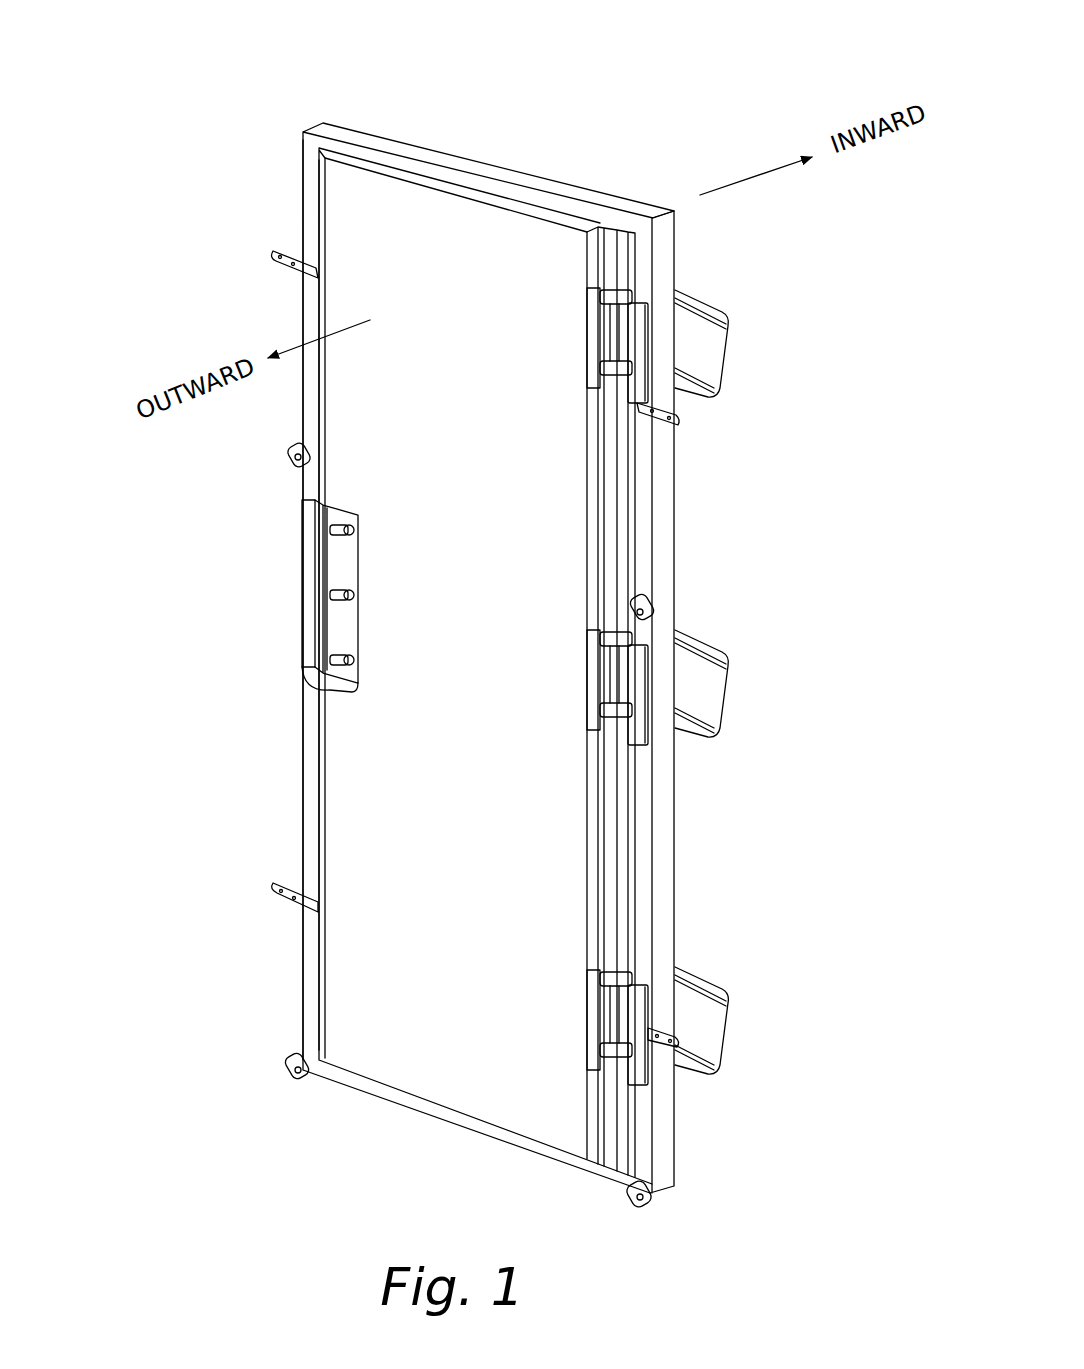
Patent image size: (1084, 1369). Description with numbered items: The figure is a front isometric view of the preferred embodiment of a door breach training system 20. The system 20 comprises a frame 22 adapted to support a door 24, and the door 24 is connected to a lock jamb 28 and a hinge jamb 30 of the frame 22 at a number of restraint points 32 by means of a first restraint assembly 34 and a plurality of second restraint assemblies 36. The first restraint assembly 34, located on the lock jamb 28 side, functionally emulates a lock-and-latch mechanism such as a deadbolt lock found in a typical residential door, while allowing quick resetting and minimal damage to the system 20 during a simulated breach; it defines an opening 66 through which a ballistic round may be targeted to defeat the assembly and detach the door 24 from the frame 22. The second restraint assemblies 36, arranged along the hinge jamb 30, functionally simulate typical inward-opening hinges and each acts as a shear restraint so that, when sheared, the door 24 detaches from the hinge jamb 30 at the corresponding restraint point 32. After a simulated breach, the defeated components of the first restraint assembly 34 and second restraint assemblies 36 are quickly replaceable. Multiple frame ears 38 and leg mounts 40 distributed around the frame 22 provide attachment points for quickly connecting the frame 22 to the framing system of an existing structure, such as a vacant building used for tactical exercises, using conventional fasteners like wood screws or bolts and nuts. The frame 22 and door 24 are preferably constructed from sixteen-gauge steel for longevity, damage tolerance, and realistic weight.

The door breach training system 20 is at (120, 86).
The frame 22 is at (305, 160).
The door 24 is at (435, 680).
The lock jamb 28 is at (310, 227).
The hinge jamb 30 is at (667, 848).
The restraint points 32 is at (653, 355).
The first restraint assembly 34 is at (331, 693).
The second restraint assemblies 36 is at (573, 385).
The frame ears 38 is at (288, 272).
The leg mounts 40 is at (290, 455).
The opening 66 is at (333, 498).